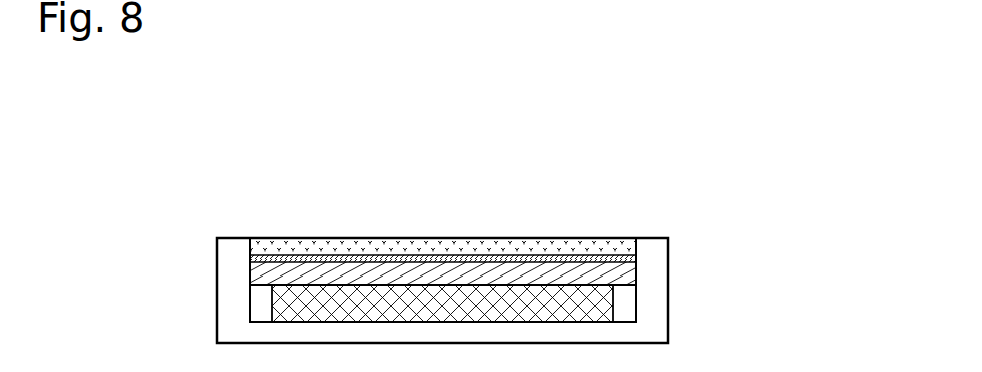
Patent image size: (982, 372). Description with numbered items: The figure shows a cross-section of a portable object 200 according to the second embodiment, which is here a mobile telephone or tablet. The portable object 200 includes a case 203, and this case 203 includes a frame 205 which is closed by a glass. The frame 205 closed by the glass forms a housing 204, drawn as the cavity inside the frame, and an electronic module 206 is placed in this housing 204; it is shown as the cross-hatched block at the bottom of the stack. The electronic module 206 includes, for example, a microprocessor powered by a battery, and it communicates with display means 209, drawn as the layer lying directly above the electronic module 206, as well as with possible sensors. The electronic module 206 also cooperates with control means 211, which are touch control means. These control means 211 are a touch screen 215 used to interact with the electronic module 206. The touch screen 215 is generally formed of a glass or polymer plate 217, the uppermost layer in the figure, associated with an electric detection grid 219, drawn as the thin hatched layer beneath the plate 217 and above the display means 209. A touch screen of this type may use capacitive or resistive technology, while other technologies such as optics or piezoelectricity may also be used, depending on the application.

The portable object 200 is at (769, 178).
The control means 211 is at (212, 215).
The case 203 is at (672, 256).
The frame 205 is at (645, 290).
The touch screen 215 is at (222, 254).
The glass or polymer plate 217 is at (573, 250).
The electric detection grid 219 is at (302, 260).
The display means 209 is at (470, 277).
The electronic module 206 is at (363, 307).
The housing 204 is at (628, 312).